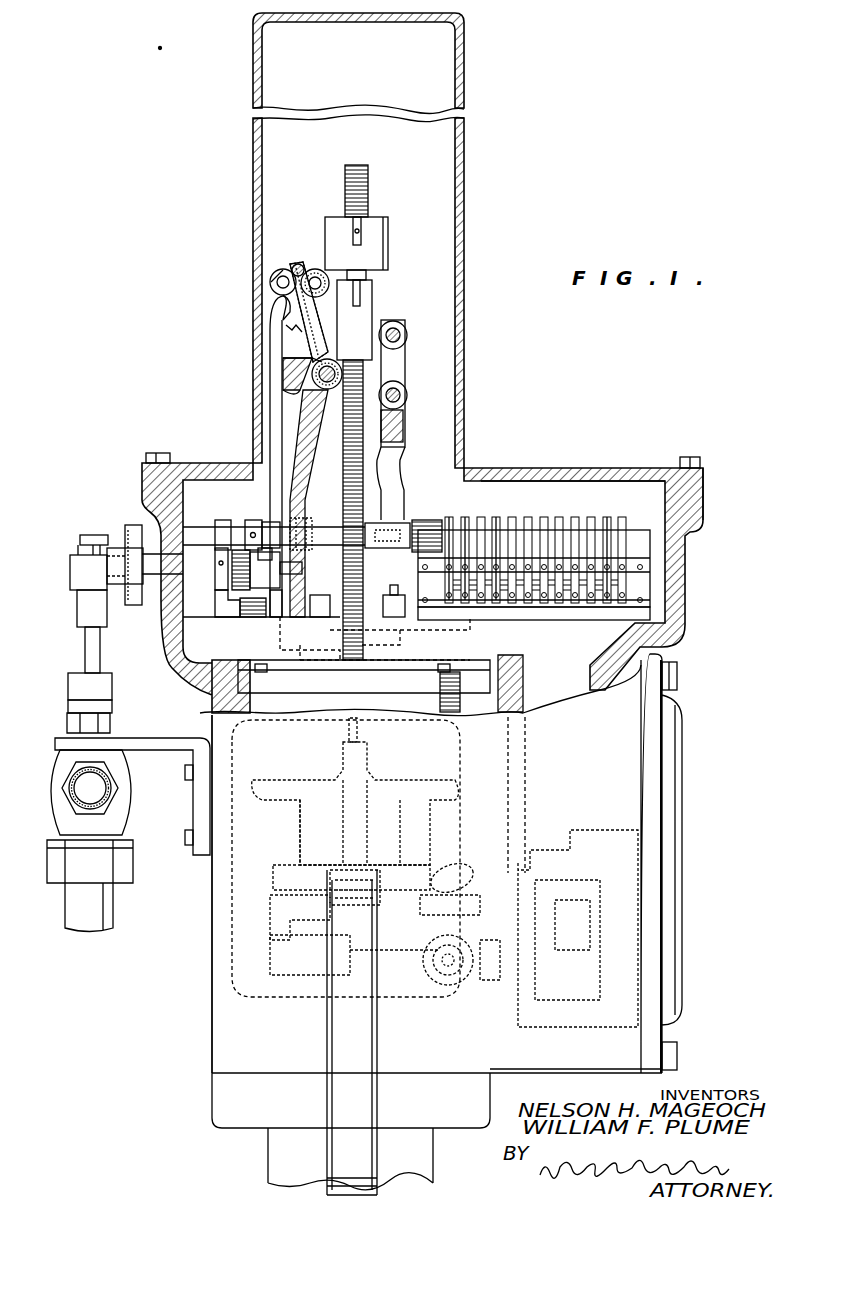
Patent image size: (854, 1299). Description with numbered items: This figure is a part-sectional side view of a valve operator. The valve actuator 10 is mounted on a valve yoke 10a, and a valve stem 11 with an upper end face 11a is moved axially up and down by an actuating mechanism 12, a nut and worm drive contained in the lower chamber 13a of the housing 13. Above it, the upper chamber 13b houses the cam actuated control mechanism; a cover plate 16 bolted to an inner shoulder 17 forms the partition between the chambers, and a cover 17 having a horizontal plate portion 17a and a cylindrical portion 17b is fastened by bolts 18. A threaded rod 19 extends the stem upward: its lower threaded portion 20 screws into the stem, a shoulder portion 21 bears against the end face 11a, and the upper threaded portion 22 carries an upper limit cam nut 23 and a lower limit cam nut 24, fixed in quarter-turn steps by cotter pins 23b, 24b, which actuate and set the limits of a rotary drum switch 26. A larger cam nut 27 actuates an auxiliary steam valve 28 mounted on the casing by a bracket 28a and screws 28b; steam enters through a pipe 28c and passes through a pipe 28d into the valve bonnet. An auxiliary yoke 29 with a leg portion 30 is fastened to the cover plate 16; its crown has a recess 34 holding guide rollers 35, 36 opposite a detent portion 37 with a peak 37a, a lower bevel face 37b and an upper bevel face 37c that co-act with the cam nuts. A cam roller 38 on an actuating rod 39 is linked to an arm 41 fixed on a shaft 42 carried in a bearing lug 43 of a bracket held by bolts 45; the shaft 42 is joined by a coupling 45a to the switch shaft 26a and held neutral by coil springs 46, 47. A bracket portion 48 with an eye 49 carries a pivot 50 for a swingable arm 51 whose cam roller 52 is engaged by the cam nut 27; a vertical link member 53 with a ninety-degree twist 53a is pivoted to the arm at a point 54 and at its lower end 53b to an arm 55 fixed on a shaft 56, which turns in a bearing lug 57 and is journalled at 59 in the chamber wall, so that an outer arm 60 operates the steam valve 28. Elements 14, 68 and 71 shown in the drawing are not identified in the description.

The valve actuator 10 is at (688, 640).
The valve yoke 10a is at (268, 1166).
The valve stem 11 is at (327, 1032).
The upper end face 11a is at (375, 870).
The actuating mechanism 12 is at (477, 900).
The housing 13 is at (212, 916).
The lower chamber 13a is at (378, 857).
The upper chamber 13b is at (545, 481).
The drive gear 14 is at (413, 514).
The cover plate 16 is at (220, 618).
The cover 17 is at (470, 468).
The horizontal plate portion 17a is at (610, 468).
The cylindrical portion 17b is at (466, 188).
The bolts 18 is at (156, 453).
The threaded rod 19 is at (362, 168).
The threaded portion 20 is at (385, 898).
The shoulder portion 21 is at (372, 826).
The threaded portion 22 is at (370, 758).
The upper limit cam nut 23 is at (374, 292).
The cotter pin 23b is at (361, 300).
The lower limit cam nut 24 is at (380, 680).
The cotter pin 24b is at (360, 735).
The rotary drum switch 26 is at (583, 517).
The shaft 26a is at (394, 595).
The cam nut 27 is at (385, 219).
The auxiliary steam valve 28 is at (118, 808).
The bracket 28a is at (165, 732).
The screws 28b is at (362, 232).
The pipe 28c is at (112, 778).
The pipe 28d is at (60, 893).
The auxiliary yoke 29 is at (402, 452).
The leg portion 30 is at (375, 625).
The recess 34 is at (406, 362).
The guide roller 35 is at (408, 336).
The guide roller 36 is at (408, 396).
The detent portion 37 is at (283, 378).
The peak 37a is at (295, 430).
The lower bevel face 37b is at (283, 396).
The upper bevel face 37c is at (285, 360).
The cam roller 38 is at (332, 362).
The actuating rod 39 is at (286, 522).
The arm 41 is at (310, 520).
The shaft 42 is at (213, 535).
The bearing lug 43 is at (215, 606).
The bolts 45 is at (253, 612).
The coupling 45a is at (382, 520).
The coil spring 46 is at (248, 520).
The coil spring 47 is at (270, 522).
The bracket portion 48 is at (275, 300).
The eye 49 is at (275, 275).
The pivot 50 is at (271, 280).
The swingable arm 51 is at (283, 268).
The cam roller 52 is at (313, 267).
The link member 53 is at (268, 450).
The ninety degree twist 53a is at (268, 316).
The pivotal connection 53b is at (302, 567).
The pivot point 54 is at (294, 265).
The arm 55 is at (310, 560).
The shaft 56 is at (160, 535).
The bearing lug 57 is at (215, 580).
The journal 59 is at (140, 606).
The arm 60 is at (70, 575).
The cam blade 68 is at (455, 518).
The cam blade 71 is at (510, 518).